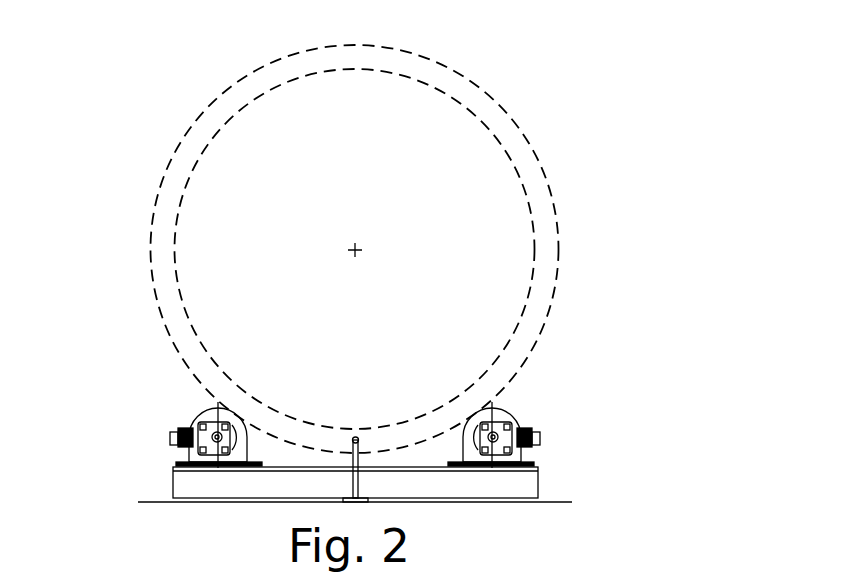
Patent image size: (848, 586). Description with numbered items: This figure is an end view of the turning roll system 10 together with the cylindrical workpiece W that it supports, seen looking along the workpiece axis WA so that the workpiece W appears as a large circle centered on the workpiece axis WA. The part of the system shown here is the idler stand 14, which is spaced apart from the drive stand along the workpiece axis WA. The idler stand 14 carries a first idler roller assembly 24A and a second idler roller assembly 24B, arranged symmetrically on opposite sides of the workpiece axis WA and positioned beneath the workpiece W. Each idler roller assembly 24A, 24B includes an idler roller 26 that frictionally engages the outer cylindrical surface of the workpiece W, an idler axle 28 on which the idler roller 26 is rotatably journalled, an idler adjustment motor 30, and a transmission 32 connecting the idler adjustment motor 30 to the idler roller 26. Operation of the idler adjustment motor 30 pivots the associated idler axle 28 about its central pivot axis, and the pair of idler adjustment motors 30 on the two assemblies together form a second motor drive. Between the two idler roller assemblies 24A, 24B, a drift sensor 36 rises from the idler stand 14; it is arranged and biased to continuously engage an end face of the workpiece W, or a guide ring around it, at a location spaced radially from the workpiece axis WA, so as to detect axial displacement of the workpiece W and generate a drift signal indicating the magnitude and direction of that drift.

The workpiece W is at (183, 141).
The workpiece axis WA is at (360, 245).
The turning roll system 10 is at (528, 384).
The idler stand 14 is at (539, 487).
The first idler roller assembly 24A is at (564, 446).
The second idler roller assembly 24B is at (146, 446).
The idler roller 26 is at (203, 413).
The idler axle 28 is at (183, 463).
The idler adjustment motor 30 is at (170, 437).
The transmission 32 is at (248, 452).
The drift sensor 36 is at (358, 440).